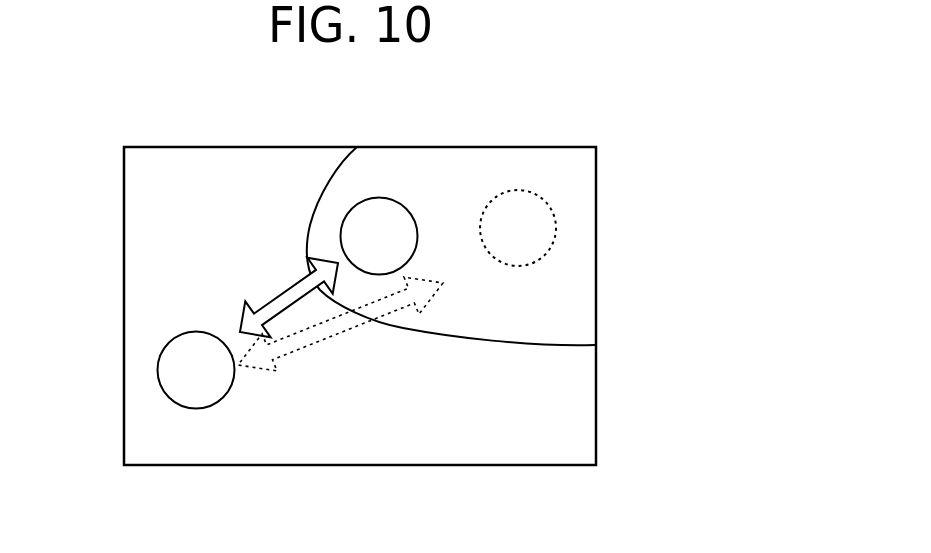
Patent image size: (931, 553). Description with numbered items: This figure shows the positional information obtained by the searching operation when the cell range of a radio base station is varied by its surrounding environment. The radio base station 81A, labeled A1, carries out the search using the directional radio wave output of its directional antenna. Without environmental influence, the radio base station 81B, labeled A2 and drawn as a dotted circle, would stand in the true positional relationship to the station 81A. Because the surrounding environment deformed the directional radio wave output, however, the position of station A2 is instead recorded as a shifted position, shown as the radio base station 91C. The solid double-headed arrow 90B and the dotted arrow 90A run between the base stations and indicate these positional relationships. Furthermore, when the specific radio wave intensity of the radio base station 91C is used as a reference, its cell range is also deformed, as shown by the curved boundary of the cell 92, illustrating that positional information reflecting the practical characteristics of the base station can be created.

The radio base station 81A is at (157, 366).
The radio base station 81B is at (531, 190).
The dashed arrow indicating movement path 90A is at (318, 343).
The arrow indicating movement path 90B is at (266, 302).
The radio base station 91C is at (400, 198).
The cell 92 is at (470, 341).